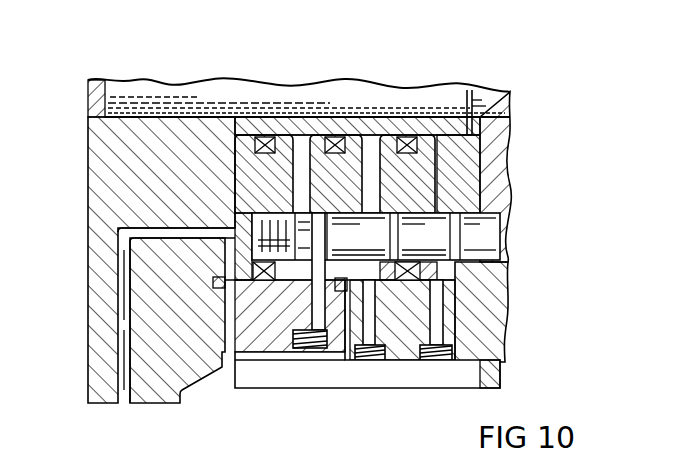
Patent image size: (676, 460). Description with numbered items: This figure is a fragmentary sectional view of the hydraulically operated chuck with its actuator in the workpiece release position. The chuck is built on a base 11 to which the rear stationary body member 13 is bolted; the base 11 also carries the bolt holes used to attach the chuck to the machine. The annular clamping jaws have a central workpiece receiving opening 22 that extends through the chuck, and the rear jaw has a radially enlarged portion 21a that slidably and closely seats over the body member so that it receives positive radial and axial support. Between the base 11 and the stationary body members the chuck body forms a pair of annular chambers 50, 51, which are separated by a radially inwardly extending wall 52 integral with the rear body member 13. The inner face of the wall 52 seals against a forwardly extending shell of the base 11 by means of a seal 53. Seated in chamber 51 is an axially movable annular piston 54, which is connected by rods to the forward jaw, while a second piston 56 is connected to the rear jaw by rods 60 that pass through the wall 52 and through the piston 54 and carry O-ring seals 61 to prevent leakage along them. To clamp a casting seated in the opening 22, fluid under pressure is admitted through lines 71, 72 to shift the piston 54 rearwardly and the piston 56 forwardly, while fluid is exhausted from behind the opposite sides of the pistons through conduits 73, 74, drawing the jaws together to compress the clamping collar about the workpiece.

The base 11 is at (105, 285).
The body member 13 is at (247, 320).
The radially enlarged portion 21a is at (502, 383).
The central workpiece receiving opening 22 is at (128, 96).
The annular chamber 50 is at (303, 153).
The annular chamber 51 is at (373, 157).
The wall 52 is at (357, 150).
The seal 53 is at (331, 133).
The piston 54 is at (425, 150).
The piston 56 is at (288, 135).
The rods 60 is at (495, 237).
The O-ring seals 61 is at (455, 262).
The line 71 is at (440, 362).
The line 72 is at (127, 338).
The conduit 73 is at (365, 362).
The conduit 74 is at (310, 350).